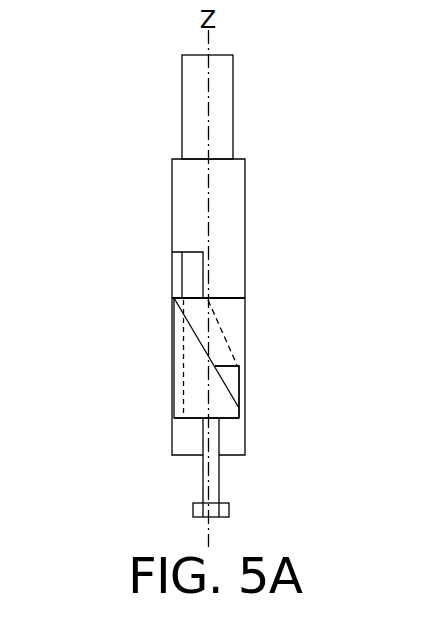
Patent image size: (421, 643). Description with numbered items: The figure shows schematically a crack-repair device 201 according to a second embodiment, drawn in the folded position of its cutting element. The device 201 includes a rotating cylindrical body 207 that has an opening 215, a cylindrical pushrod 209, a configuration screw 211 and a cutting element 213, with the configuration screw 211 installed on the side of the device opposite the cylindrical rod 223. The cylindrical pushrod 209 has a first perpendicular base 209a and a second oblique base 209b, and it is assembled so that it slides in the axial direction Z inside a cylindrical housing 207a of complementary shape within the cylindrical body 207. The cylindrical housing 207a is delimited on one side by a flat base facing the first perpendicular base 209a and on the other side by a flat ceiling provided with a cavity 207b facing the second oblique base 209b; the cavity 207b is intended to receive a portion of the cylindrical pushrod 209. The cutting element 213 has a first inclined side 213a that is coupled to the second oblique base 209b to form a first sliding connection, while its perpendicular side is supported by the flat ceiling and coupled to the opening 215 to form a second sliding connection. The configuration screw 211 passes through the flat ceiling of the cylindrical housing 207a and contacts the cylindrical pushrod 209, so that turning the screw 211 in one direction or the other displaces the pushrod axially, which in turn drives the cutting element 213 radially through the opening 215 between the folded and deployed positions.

The crack-repair device 201 is at (160, 163).
The rotating cylindrical body 207 is at (245, 168).
The cylindrical housing 207a is at (234, 374).
The cavity 207b is at (187, 285).
The cylindrical pushrod 209 is at (197, 390).
The first perpendicular base 209a is at (193, 425).
The second oblique base 209b is at (200, 329).
The configuration screw 211 is at (203, 482).
The cutting element 213 is at (203, 317).
The first inclined side 213a is at (194, 353).
The opening 215 is at (251, 293).
The cylindrical rod 223 is at (182, 78).